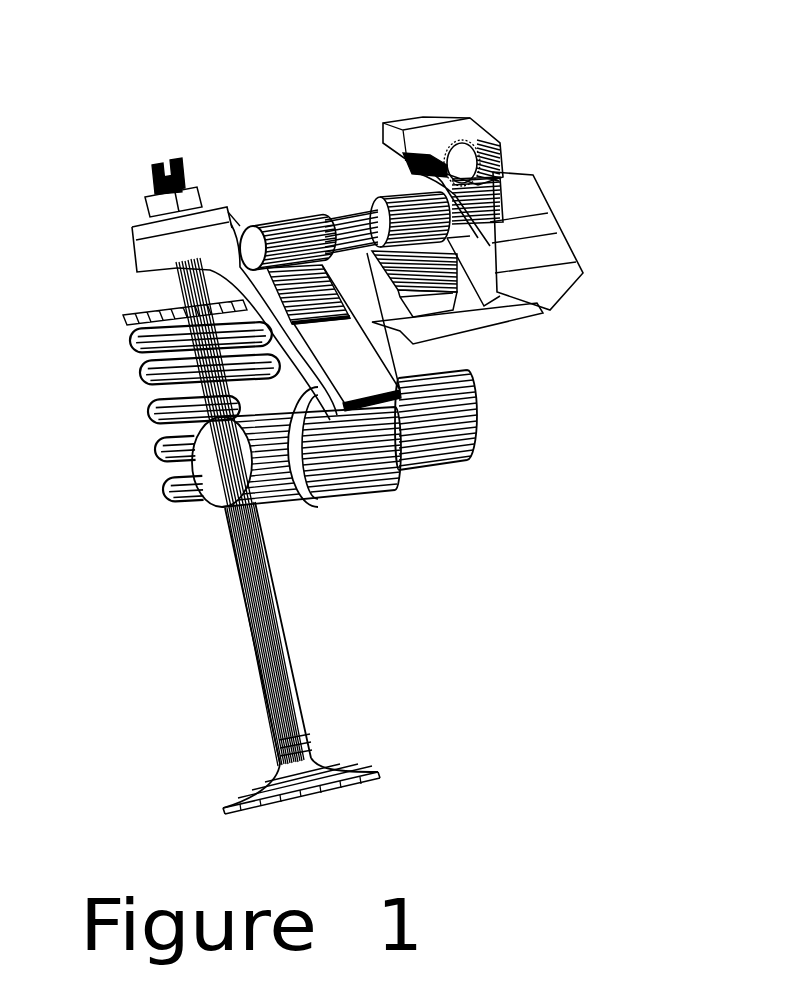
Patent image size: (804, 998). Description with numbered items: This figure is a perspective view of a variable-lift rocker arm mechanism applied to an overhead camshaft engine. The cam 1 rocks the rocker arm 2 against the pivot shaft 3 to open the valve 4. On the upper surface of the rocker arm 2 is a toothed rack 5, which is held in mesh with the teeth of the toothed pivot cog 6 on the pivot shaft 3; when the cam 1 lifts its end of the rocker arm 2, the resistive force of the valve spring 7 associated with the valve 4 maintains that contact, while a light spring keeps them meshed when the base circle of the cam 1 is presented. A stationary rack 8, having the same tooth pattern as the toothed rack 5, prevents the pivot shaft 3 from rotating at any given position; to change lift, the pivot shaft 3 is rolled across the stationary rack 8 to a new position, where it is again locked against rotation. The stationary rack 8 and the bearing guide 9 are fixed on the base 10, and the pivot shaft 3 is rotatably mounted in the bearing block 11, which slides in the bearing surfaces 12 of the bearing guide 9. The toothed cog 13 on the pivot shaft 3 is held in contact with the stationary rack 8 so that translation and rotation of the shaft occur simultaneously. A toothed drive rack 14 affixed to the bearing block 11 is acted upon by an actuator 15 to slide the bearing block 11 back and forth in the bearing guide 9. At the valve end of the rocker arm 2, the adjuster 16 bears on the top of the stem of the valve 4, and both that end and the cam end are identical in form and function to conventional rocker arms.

The cam 1 is at (347, 506).
The rocker arm 2 is at (152, 248).
The pivot shaft 3 is at (338, 210).
The valve 4 is at (253, 667).
The toothed rack 5 is at (233, 217).
The toothed pivot cog 6 is at (274, 213).
The valve spring 7 is at (138, 375).
The stationary rack 8 is at (430, 280).
The bearing guide 9 is at (560, 243).
The base 10 is at (487, 337).
The bearing block 11 is at (505, 262).
The bearing surfaces 12 is at (503, 260).
The toothed cog 13 is at (373, 195).
The toothed drive rack 14 is at (430, 130).
The actuator 15 is at (500, 140).
The adjuster 16 is at (152, 163).